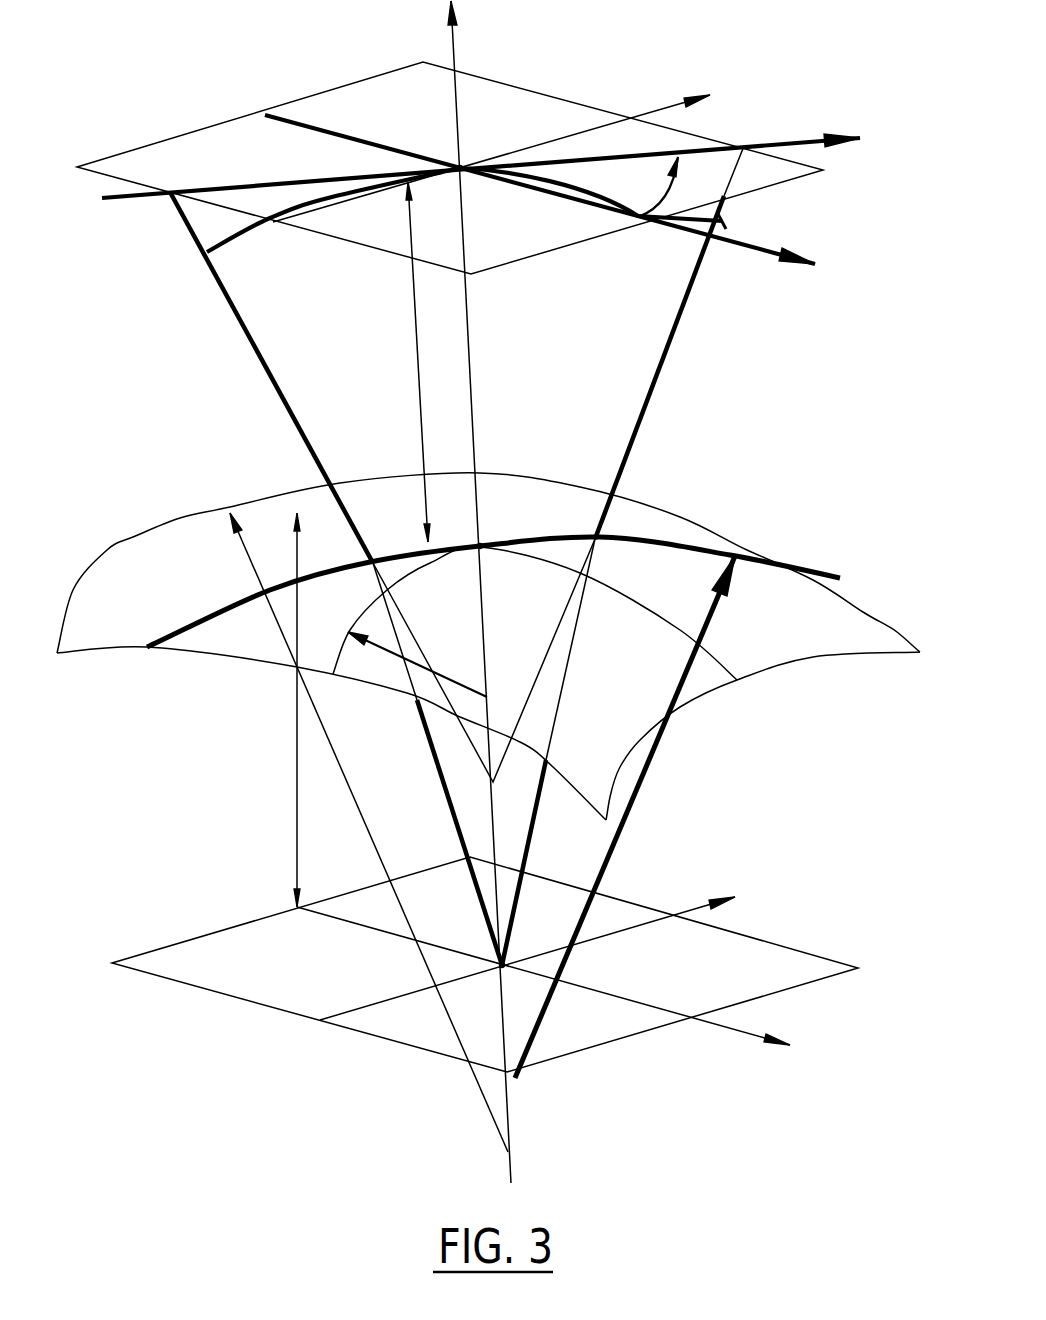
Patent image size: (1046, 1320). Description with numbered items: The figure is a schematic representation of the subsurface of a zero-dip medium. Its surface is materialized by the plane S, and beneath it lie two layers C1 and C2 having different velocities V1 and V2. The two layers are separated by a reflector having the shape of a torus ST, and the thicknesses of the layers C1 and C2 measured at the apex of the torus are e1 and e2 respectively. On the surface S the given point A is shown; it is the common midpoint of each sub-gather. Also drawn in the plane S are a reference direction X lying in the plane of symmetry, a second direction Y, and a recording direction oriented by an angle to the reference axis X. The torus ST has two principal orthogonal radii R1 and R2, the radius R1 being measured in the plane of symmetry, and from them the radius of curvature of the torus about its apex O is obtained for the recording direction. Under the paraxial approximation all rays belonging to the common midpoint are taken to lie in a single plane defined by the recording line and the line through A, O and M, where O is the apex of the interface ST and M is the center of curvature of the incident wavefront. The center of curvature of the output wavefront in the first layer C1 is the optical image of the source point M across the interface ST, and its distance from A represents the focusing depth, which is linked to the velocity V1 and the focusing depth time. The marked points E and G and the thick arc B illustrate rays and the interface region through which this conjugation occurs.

The surface plane S is at (352, 107).
The torus interface ST is at (135, 562).
The principal arc of surface through O B is at (747, 550).
The common midpoint A is at (472, 145).
The apex of the interface O is at (495, 523).
The center of curvature of the incident wavefront M is at (517, 987).
The ray starting point E is at (270, 357).
The ray starting point G is at (681, 323).
The first layer C1 is at (165, 345).
The second layer C2 is at (180, 793).
The velocity of the first layer V1 is at (802, 364).
The velocity of the second layer V2 is at (848, 820).
The thickness of the first layer at the apex e1 is at (433, 362).
The thickness of the second layer at the apex e2 is at (277, 710).
The first principal radius R1 is at (369, 832).
The second principal radius R2 is at (417, 664).
The reference direction X is at (562, 587).
The Y axis Y is at (524, 544).